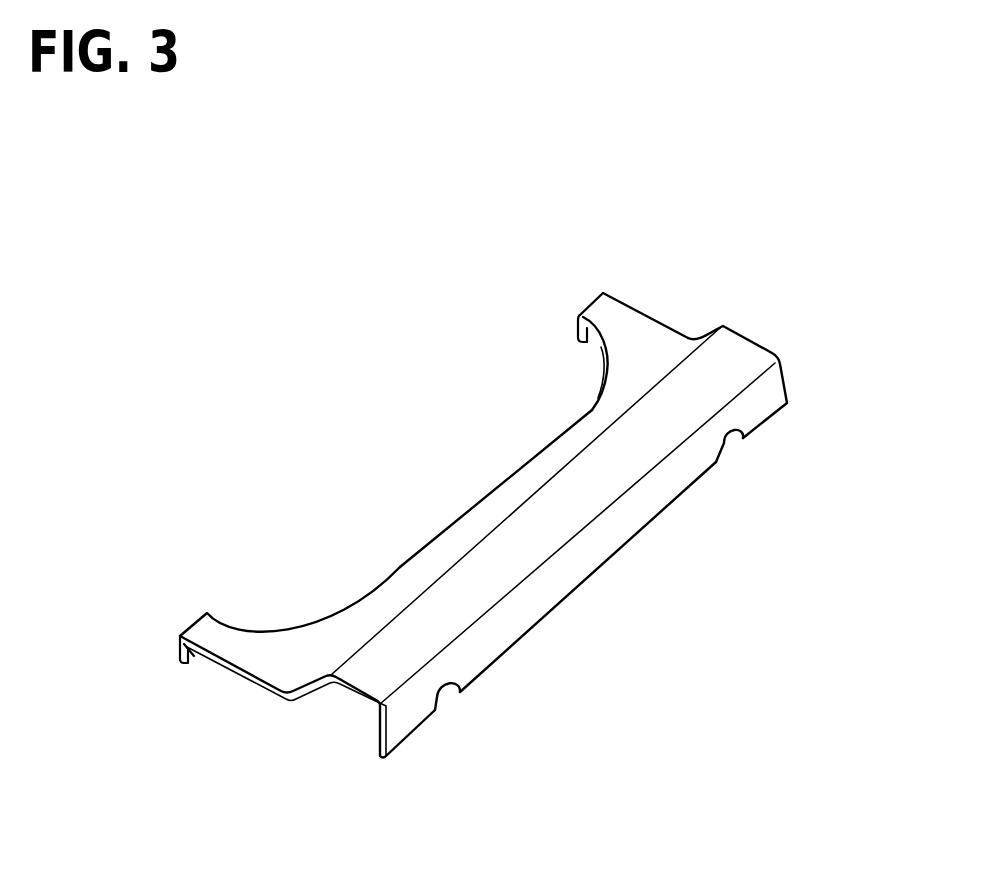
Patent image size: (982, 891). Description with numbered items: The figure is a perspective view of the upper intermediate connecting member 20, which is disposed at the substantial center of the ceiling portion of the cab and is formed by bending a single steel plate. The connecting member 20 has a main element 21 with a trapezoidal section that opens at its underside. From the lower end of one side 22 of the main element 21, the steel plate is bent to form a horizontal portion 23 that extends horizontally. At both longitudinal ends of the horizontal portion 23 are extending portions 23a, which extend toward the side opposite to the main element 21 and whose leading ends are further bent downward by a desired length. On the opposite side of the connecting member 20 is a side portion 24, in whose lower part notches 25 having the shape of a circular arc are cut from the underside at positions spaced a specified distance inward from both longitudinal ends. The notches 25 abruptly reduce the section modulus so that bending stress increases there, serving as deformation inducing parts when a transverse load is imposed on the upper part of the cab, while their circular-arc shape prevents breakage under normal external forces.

The upper intermediate connecting member 20 is at (775, 338).
The main element 21 is at (612, 520).
The one side of the main element 22 is at (383, 617).
The horizontal portion 23 is at (300, 637).
The extending portion 23a is at (607, 311).
The side portion 24 is at (548, 598).
The notch 25 is at (731, 446).